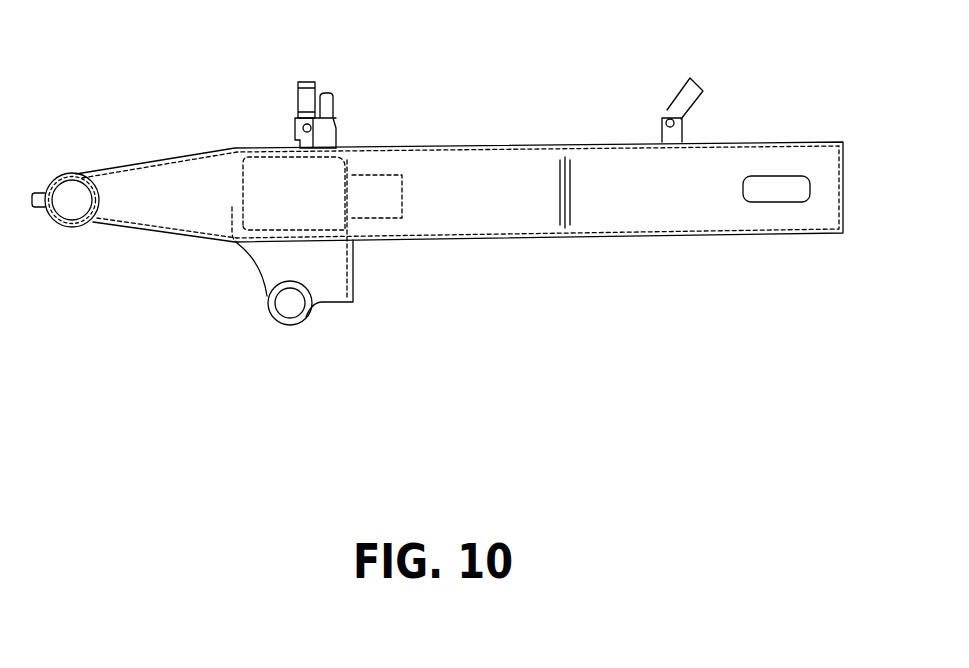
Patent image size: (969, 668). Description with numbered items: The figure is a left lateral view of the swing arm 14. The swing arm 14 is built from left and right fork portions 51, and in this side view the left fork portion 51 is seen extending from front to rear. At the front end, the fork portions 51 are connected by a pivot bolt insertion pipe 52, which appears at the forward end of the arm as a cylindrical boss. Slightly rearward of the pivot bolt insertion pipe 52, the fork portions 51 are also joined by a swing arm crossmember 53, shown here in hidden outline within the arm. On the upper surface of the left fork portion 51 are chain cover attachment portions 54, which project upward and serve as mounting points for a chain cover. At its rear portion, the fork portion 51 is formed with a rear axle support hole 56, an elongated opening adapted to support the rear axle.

The swing arm 14 is at (174, 107).
The fork portion 51 is at (490, 203).
The pivot bolt insertion pipe 52 is at (88, 225).
The swing arm crossmember 53 is at (325, 185).
The chain cover attachment portion 54 is at (297, 117).
The rear axle support hole 56 is at (768, 188).